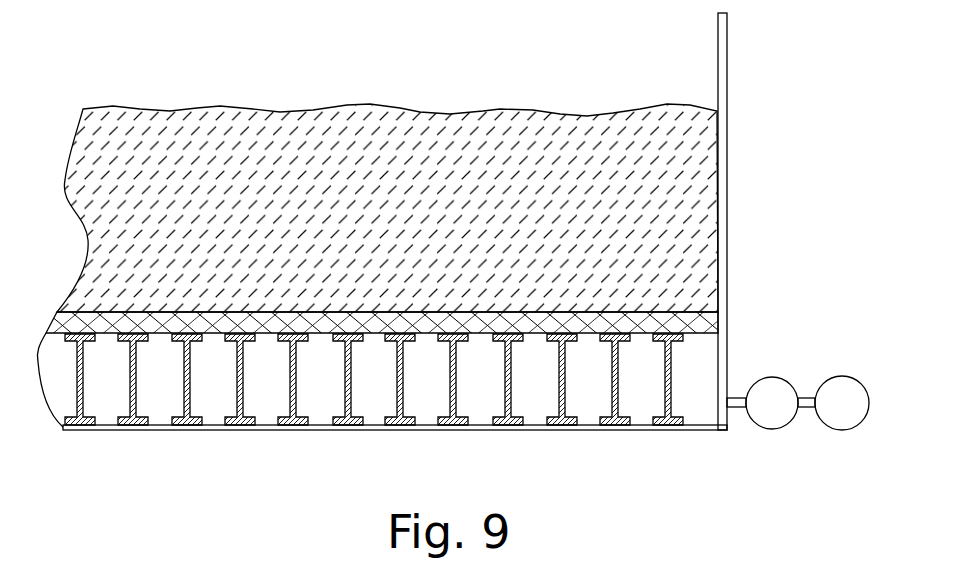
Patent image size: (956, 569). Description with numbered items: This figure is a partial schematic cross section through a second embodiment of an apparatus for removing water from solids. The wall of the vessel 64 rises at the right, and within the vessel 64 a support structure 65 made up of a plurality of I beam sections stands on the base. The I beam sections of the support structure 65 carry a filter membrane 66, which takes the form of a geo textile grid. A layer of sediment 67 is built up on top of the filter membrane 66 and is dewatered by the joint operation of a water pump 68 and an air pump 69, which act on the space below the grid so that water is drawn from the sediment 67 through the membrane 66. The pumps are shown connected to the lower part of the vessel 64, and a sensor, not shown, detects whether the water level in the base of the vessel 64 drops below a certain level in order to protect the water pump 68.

The vessel 64 is at (726, 92).
The support structure 65 is at (238, 398).
The filter membrane 66 is at (315, 328).
The layer of sediment 67 is at (410, 132).
The water pump 68 is at (840, 388).
The air pump 69 is at (765, 387).